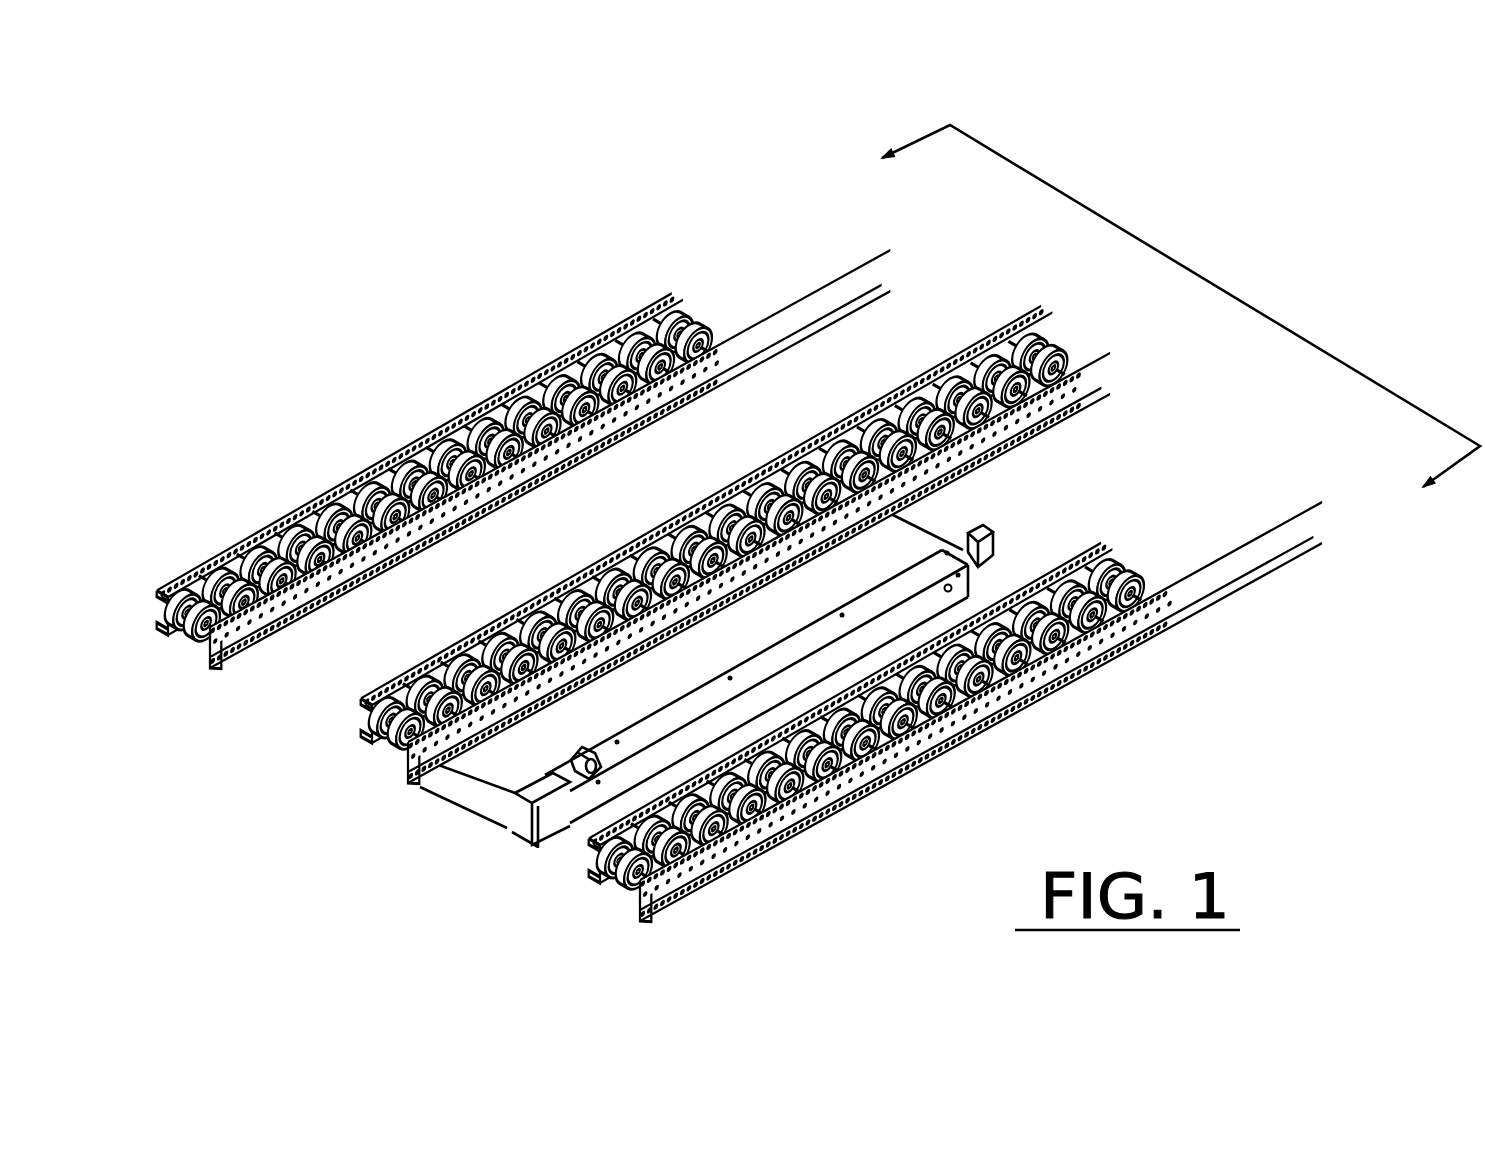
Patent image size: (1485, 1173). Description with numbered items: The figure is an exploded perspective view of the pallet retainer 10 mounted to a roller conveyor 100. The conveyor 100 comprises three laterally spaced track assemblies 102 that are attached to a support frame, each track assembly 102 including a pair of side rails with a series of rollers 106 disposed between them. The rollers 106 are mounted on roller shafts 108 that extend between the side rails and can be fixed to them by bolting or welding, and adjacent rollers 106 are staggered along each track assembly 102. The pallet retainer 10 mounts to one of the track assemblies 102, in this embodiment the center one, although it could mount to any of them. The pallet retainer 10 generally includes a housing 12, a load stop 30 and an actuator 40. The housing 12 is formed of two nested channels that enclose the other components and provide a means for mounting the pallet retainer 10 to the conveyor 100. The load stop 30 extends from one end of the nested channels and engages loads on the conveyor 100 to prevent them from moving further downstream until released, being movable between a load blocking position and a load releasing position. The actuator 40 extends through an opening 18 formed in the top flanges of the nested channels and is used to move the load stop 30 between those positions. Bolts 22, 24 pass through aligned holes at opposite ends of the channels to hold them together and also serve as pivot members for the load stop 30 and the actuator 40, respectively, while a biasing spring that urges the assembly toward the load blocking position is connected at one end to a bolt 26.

The pallet retainer 10 is at (1040, 537).
The housing 12 is at (797, 640).
The opening 18 is at (507, 790).
The bolt 22 is at (958, 589).
The bolt 24 is at (598, 787).
The bolt 26 is at (1000, 540).
The load stop 30 is at (972, 527).
The actuator 40 is at (574, 757).
The conveyor 100 is at (1220, 283).
The track assembly 102 is at (768, 612).
The roller 106 is at (460, 427).
The roller shaft 108 is at (292, 510).